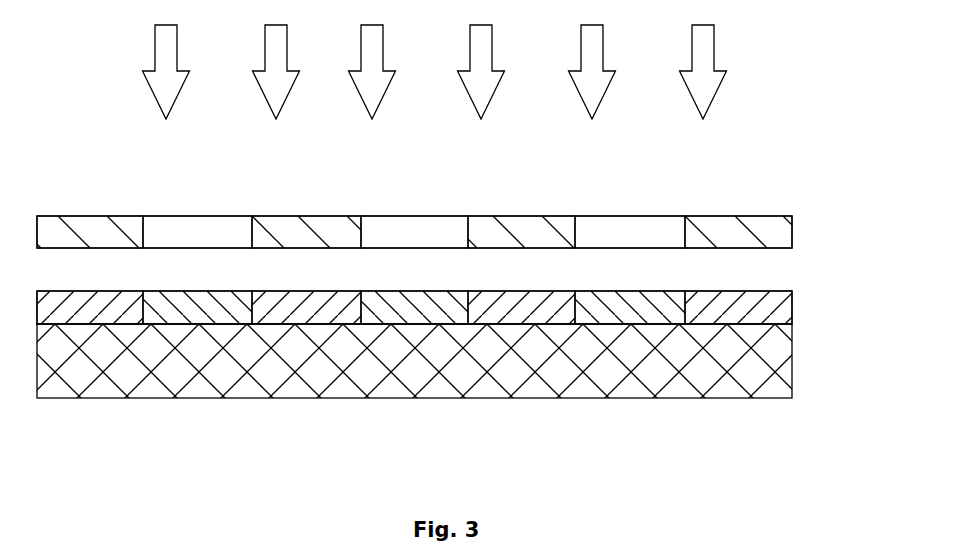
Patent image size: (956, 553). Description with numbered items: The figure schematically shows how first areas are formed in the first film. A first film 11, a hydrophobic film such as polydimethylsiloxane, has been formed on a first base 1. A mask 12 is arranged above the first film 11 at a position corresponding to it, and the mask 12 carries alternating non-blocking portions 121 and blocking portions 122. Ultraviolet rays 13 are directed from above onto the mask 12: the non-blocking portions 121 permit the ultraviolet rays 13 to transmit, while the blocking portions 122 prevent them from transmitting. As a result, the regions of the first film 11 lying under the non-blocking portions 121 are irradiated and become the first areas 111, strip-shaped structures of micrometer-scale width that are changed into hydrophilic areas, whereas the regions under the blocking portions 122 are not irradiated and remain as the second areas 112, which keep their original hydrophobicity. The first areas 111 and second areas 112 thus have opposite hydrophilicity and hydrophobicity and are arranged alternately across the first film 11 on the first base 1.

The first base 1 is at (802, 360).
The first film 11 is at (798, 307).
The first areas 111 is at (202, 312).
The second areas 112 is at (83, 313).
The mask 12 is at (800, 229).
The non-blocking portions 121 is at (190, 230).
The blocking portions 122 is at (102, 232).
The ultraviolet rays 13 is at (741, 77).